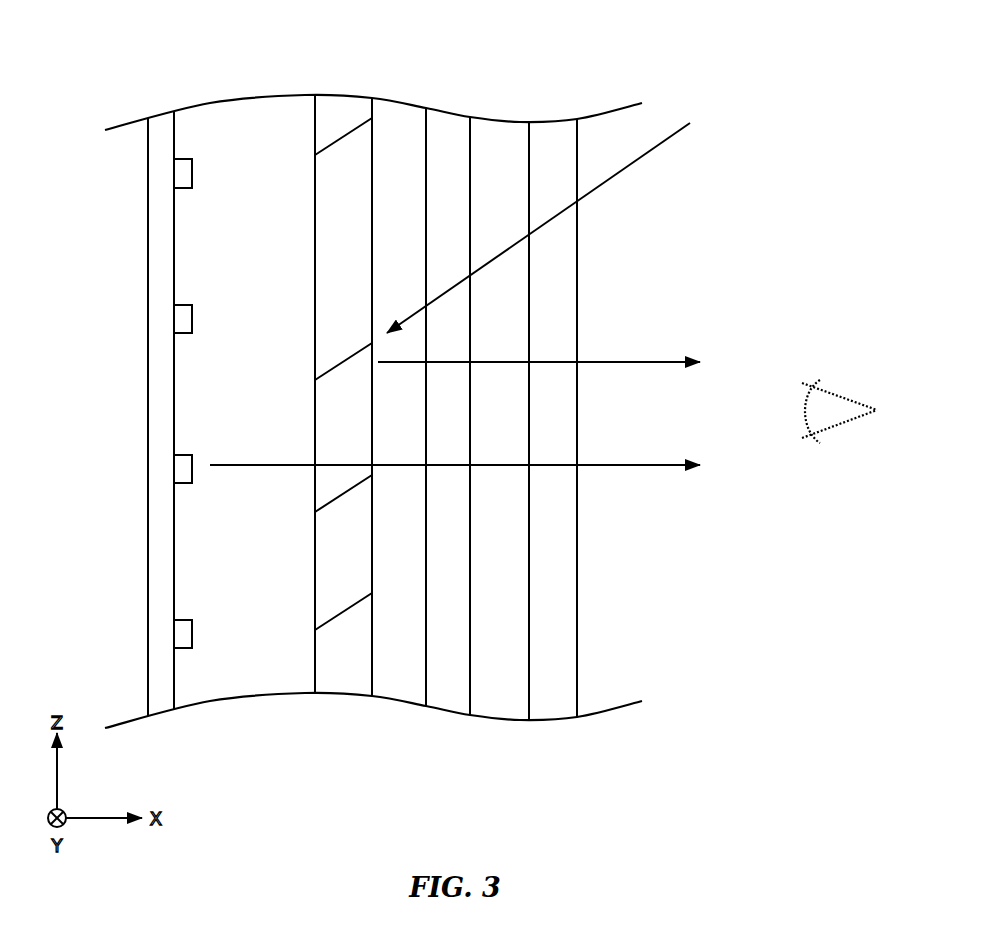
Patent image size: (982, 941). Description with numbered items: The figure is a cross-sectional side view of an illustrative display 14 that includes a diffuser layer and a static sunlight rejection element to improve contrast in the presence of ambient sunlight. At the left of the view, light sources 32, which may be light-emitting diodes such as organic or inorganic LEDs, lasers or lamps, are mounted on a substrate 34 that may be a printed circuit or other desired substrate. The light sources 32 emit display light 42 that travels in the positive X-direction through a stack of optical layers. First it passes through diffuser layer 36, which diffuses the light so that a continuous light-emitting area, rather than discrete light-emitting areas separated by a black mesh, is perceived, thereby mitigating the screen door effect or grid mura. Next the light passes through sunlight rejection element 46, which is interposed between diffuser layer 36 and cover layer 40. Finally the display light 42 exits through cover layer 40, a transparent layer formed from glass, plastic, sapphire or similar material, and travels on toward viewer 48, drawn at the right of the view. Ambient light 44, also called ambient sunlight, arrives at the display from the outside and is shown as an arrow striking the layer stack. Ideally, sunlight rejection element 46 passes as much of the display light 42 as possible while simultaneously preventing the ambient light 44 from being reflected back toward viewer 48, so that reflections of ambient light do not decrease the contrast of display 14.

The display 14 is at (482, 60).
The light sources 32 is at (193, 165).
The substrate 34 is at (160, 120).
The diffuser layer 36 is at (345, 108).
The cover layer 40 is at (548, 128).
The display light 42 is at (613, 468).
The ambient light 44 is at (648, 153).
The sunlight rejection element 46 is at (447, 120).
The viewer 48 is at (847, 422).